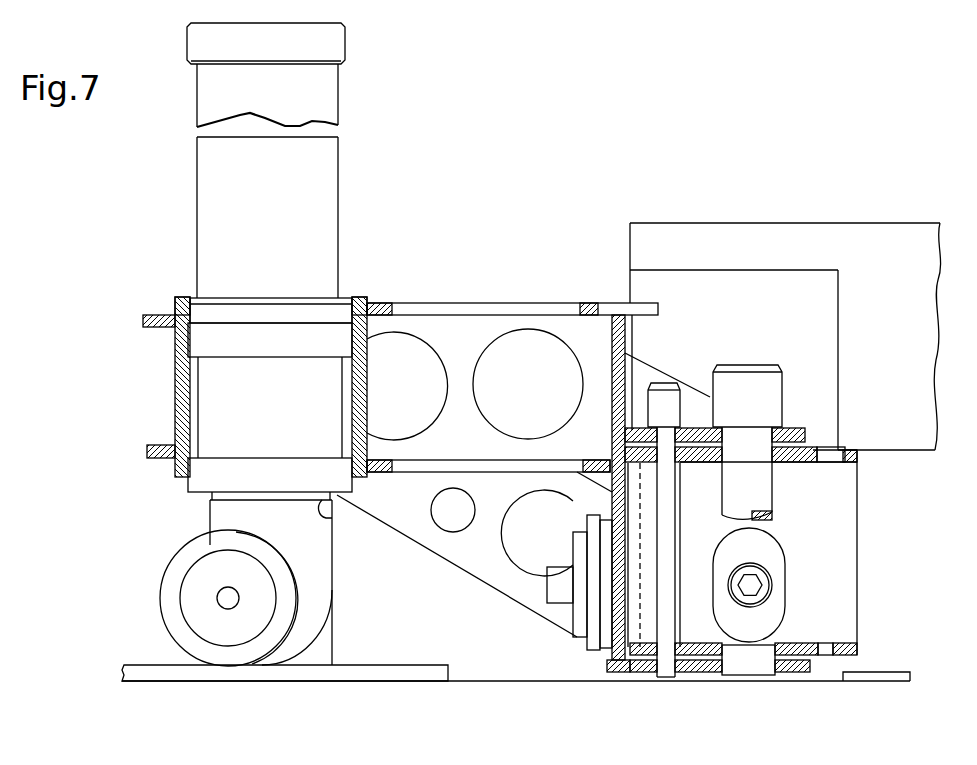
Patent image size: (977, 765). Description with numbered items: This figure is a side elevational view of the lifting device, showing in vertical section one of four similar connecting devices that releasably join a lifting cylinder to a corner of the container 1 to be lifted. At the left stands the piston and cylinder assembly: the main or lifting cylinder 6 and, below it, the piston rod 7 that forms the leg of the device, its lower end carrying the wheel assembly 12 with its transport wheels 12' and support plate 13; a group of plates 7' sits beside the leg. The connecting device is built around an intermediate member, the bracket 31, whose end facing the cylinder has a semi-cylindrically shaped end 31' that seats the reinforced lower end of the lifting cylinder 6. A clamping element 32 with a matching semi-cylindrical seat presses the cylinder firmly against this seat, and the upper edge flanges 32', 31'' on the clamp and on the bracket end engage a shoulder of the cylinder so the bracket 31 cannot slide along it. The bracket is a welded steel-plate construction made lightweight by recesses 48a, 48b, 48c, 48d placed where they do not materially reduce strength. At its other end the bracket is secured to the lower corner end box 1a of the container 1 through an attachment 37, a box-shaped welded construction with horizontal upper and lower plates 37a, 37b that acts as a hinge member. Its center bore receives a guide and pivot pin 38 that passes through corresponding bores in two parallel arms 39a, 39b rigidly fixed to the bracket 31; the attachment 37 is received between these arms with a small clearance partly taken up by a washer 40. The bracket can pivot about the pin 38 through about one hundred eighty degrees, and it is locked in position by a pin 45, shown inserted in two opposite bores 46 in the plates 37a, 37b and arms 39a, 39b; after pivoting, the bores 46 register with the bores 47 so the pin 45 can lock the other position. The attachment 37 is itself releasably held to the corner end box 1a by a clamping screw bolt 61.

The container 1 is at (936, 323).
The corner end box 1a is at (840, 680).
The lifting cylinder 6 is at (338, 118).
The piston rod 7 is at (286, 515).
The stacked plates 7' is at (577, 582).
The wheel assembly 12 is at (294, 582).
The transport wheels 12' is at (202, 598).
The support plate 13 is at (398, 665).
The bracket 31 is at (477, 444).
The semi-cylindrically shaped end of the bracket 31' is at (331, 387).
The upper edge flange 31'' is at (375, 283).
The clamping element 32 is at (151, 387).
The upper edge flange 32' is at (164, 285).
The attachment 37 is at (863, 530).
The upper plate 37a is at (800, 462).
The lower plate 37b is at (800, 645).
The guide and pivot pin 38 is at (770, 515).
The arm 39a is at (790, 430).
The arm 39b is at (820, 665).
The washer 40 is at (700, 428).
The pin 45 is at (668, 530).
The bores 46 is at (830, 448).
The bores 47 is at (645, 428).
The recess 48a is at (582, 306).
The recess 48b is at (490, 360).
The recess 48c is at (432, 500).
The recess 48d is at (525, 505).
The clamping screw bolt 61 is at (755, 585).